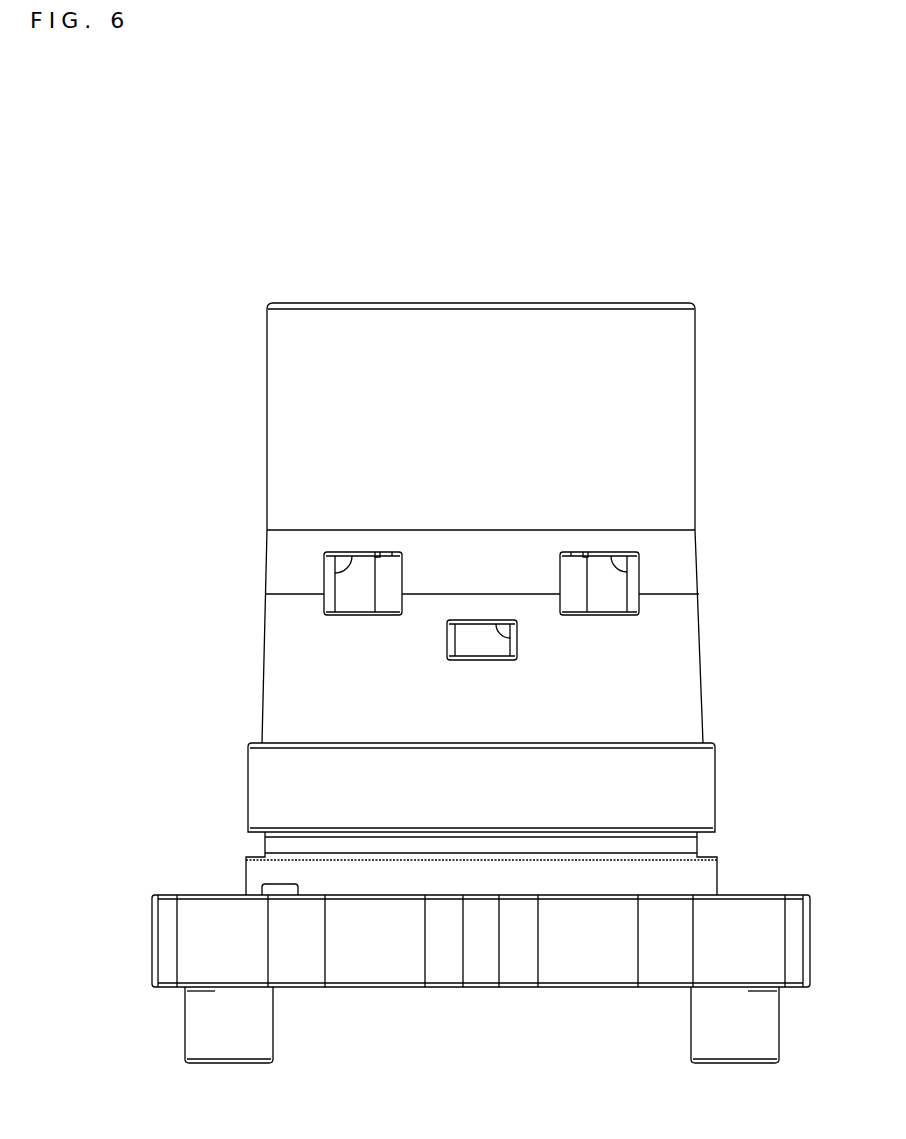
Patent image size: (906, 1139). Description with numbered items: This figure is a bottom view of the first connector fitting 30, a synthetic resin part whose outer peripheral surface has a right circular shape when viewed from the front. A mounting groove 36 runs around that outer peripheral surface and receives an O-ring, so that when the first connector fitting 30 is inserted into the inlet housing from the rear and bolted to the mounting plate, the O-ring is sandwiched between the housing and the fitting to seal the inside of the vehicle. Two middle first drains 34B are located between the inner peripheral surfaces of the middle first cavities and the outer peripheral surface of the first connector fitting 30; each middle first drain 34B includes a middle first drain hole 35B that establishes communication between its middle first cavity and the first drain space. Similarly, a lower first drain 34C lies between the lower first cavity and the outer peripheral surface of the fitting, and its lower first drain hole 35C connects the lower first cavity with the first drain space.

The first connector fitting 30 is at (467, 258).
The middle first drain 34B is at (340, 567).
The middle first drain hole 35B is at (367, 578).
The lower first drain 34C is at (485, 626).
The lower first drain hole 35C is at (472, 647).
The mounting groove 36 is at (698, 845).